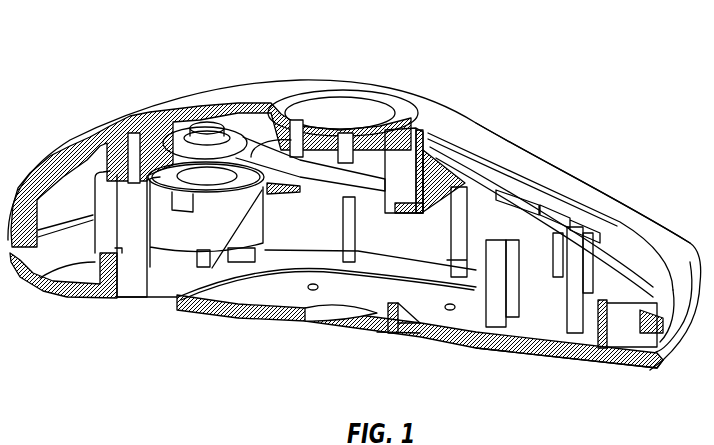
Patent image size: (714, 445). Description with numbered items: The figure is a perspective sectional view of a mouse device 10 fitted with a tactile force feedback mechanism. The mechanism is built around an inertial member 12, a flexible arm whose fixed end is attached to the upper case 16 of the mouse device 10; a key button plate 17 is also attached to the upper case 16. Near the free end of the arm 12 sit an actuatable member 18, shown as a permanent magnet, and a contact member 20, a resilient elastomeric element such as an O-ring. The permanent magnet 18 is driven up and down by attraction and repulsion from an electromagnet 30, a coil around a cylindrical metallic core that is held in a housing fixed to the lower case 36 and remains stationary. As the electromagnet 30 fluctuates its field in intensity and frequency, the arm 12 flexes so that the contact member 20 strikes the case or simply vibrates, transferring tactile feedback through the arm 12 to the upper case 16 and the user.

The mouse device 10 is at (566, 42).
The inertial member 12 is at (298, 172).
The upper case 16 is at (436, 110).
The key button plate 17 is at (616, 201).
The actuatable member 18 is at (205, 125).
The contact member 20 is at (168, 143).
The electromagnet 30 is at (163, 302).
The lower case 36 is at (573, 357).